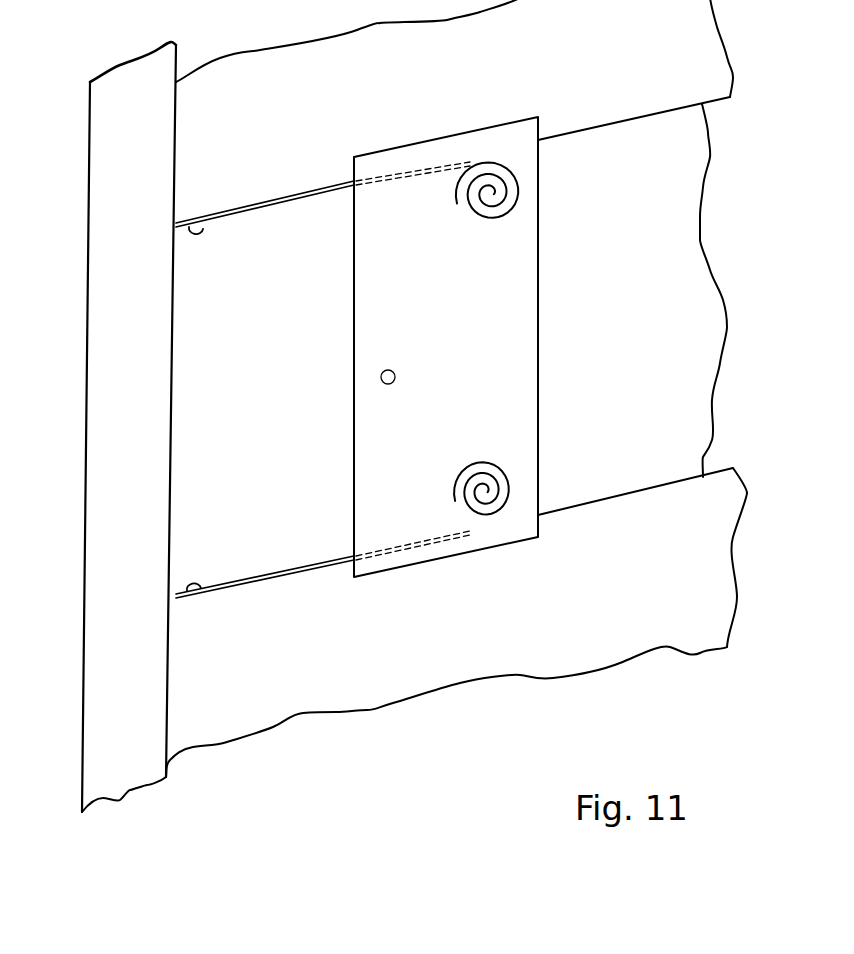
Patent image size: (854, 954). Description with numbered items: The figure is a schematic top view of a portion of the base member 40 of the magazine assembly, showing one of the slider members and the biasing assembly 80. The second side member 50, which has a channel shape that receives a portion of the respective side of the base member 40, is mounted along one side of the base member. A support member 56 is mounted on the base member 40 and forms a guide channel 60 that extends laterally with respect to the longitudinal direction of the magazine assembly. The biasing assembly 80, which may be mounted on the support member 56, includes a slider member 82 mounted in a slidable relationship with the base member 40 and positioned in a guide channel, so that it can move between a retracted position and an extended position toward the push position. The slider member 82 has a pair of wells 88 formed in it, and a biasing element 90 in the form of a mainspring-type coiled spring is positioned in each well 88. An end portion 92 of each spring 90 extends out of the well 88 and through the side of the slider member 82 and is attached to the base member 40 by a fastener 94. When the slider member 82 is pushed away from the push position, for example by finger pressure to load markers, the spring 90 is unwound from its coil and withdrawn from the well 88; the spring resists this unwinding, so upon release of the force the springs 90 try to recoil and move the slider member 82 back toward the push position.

The base member 40 is at (303, 600).
The second side member 50 is at (117, 770).
The support member 56 is at (273, 670).
The guide channel 60 is at (675, 217).
The biasing assembly 80 is at (495, 300).
The slider member 82 is at (503, 370).
The well 88 is at (527, 180).
The biasing element 90 is at (515, 205).
The end portion 92 is at (250, 220).
The fastener 94 is at (196, 234).